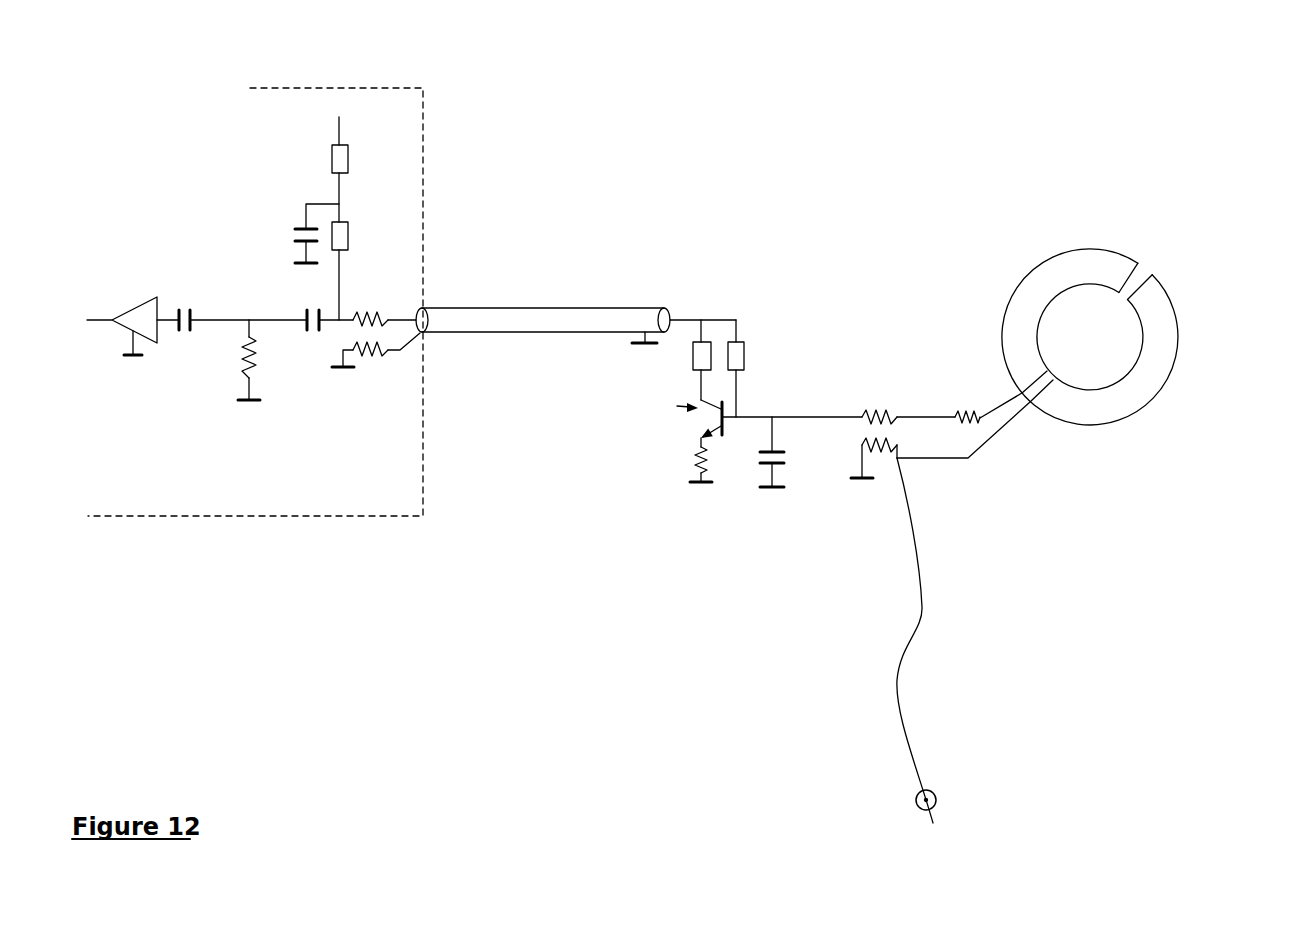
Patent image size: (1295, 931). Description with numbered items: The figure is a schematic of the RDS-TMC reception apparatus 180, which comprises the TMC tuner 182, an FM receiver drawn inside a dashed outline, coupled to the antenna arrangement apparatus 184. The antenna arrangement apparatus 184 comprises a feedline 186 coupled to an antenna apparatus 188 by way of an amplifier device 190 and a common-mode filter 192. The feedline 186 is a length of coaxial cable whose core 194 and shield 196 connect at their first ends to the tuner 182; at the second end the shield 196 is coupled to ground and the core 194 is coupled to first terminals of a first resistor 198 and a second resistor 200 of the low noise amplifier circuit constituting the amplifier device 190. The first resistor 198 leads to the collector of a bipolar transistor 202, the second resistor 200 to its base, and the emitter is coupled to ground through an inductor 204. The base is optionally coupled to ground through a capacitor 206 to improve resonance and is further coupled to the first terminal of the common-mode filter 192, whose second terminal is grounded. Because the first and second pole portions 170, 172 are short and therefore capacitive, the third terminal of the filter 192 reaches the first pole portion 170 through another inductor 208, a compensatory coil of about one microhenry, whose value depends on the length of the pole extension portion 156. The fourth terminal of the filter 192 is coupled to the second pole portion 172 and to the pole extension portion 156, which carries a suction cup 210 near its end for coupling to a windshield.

The pole extension portion 156 is at (917, 593).
The first pole portion 170 is at (1112, 268).
The second pole portion 172 is at (1158, 310).
The RDS-TMC reception apparatus 180 is at (425, 707).
The TMC tuner 182 is at (380, 88).
The antenna arrangement apparatus 184 is at (1192, 100).
The feedline 186 is at (503, 318).
The antenna apparatus 188 is at (1192, 177).
The amplifier device 190 is at (725, 512).
The common-mode filter 192 is at (863, 368).
The core 194 is at (403, 318).
The shield 196 is at (424, 333).
The first resistor 198 is at (700, 355).
The second resistor 200 is at (735, 350).
The bipolar transistor 202 is at (688, 413).
The inductor 204 is at (692, 463).
The capacitor 206 is at (785, 468).
The another inductor 208 is at (982, 422).
The suction cup 210 is at (937, 790).